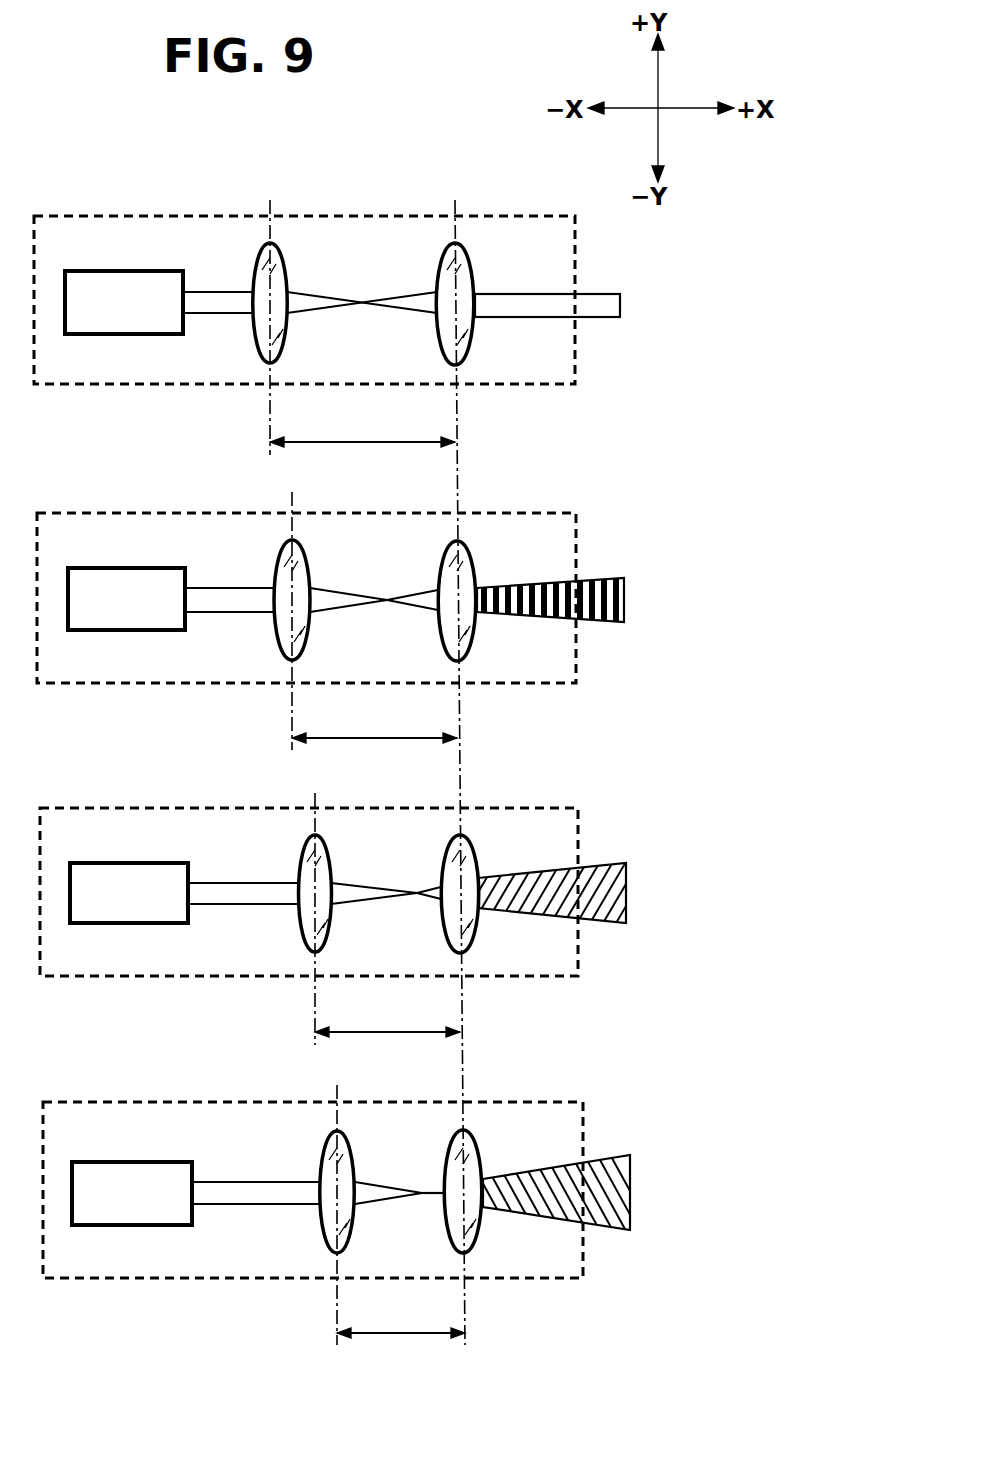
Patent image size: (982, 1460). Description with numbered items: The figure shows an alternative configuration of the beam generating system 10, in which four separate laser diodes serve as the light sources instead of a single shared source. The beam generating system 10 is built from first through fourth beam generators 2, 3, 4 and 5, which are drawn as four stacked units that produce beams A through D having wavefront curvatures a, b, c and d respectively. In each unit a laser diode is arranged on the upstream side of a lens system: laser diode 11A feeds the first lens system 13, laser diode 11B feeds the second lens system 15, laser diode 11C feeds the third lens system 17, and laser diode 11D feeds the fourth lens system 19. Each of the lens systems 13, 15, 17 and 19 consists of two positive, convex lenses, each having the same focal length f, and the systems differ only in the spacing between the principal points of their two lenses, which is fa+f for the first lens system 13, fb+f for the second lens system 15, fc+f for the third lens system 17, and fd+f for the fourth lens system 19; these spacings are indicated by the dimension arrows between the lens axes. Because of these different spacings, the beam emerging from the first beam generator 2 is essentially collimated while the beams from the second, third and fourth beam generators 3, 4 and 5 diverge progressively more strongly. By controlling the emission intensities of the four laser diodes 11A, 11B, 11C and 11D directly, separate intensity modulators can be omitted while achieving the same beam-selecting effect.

The first beam generator 2 is at (222, 216).
The second beam generator 3 is at (228, 513).
The third beam generator 4 is at (230, 808).
The fourth beam generator 5 is at (233, 1102).
The beam generating system 10 is at (328, 174).
The laser diode 11A is at (143, 241).
The laser diode 11B is at (145, 537).
The laser diode 11C is at (148, 832).
The laser diode 11D is at (152, 1128).
The first lens system 13 is at (437, 258).
The second lens system 15 is at (438, 555).
The third lens system 17 is at (441, 852).
The fourth lens system 19 is at (446, 1149).